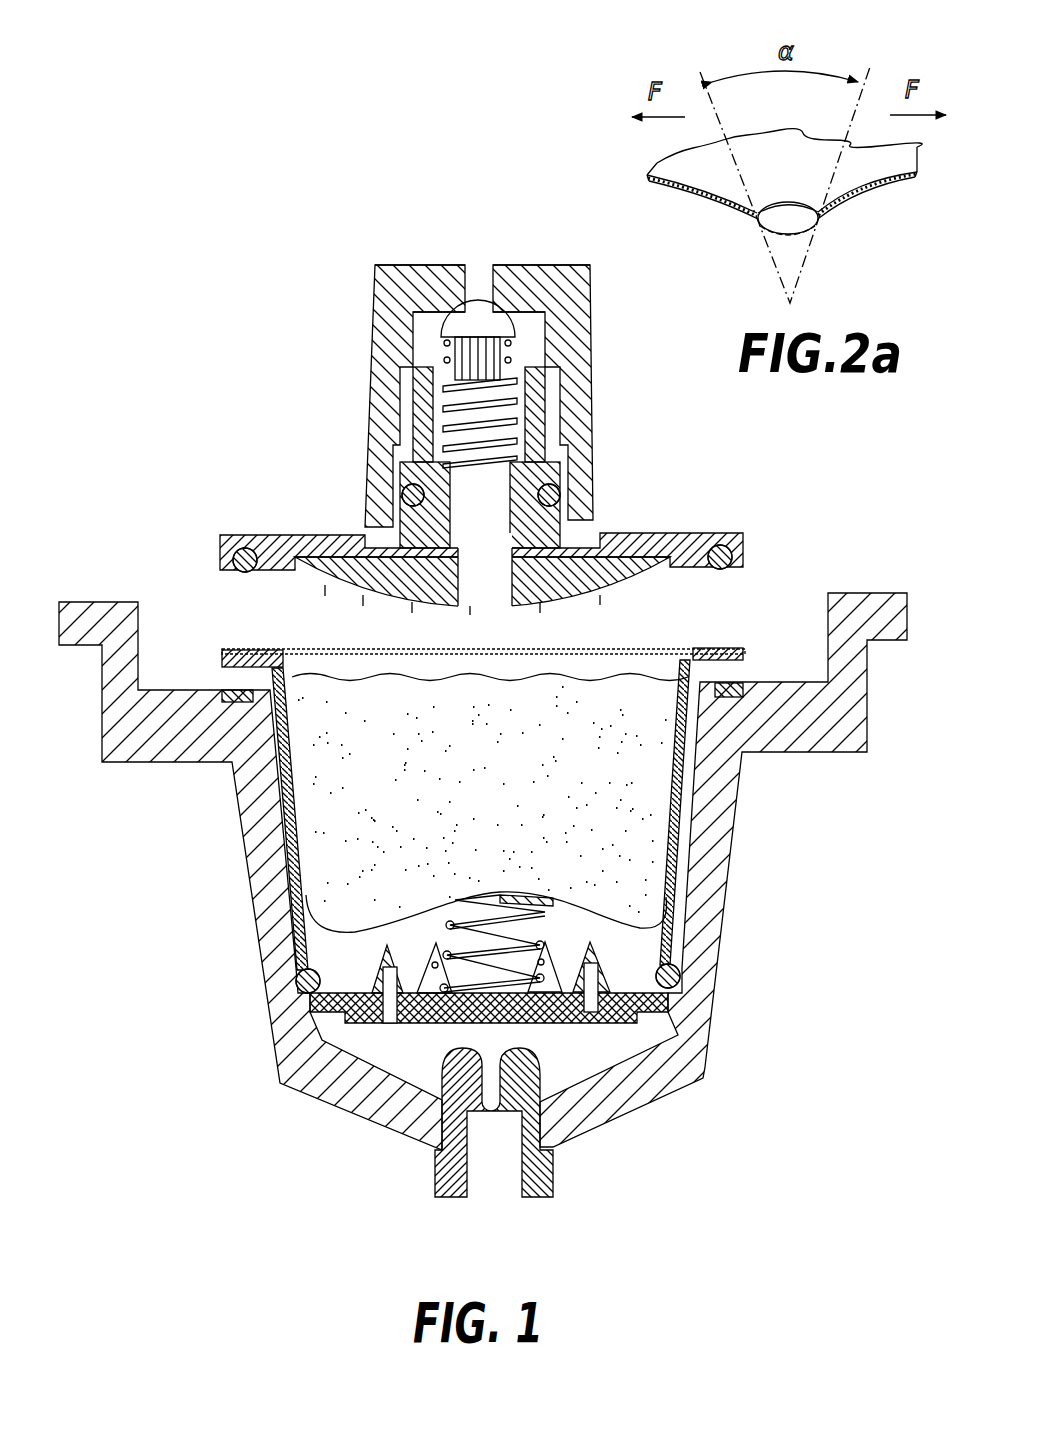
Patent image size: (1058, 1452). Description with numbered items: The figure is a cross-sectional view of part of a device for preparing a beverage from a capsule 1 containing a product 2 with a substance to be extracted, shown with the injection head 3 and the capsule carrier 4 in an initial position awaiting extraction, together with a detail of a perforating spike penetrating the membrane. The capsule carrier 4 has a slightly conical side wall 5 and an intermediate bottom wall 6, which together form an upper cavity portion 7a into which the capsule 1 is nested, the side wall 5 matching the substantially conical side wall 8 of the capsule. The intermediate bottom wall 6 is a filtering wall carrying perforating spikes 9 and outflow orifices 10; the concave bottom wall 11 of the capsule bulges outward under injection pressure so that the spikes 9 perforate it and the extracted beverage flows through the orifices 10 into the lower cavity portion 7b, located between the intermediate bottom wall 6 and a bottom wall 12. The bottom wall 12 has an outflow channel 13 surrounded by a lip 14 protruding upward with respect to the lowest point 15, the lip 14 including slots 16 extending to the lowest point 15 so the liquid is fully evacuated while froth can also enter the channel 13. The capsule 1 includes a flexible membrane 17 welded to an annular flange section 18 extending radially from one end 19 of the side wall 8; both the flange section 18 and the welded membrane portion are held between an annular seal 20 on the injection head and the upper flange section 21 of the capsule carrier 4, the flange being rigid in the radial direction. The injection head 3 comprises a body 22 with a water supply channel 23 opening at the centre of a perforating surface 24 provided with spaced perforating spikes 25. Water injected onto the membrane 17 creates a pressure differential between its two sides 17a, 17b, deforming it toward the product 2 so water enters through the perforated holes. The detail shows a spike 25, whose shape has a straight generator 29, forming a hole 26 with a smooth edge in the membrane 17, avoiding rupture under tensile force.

In FIG. 1, the capsule 1 is at (686, 821).
In FIG. 1, the product 2 is at (355, 846).
In FIG. 1, the injection head 3 is at (697, 453).
In FIG. 1, the capsule carrier 4 is at (736, 933).
In FIG. 1, the side wall 5 is at (705, 916).
In FIG. 1, the intermediate bottom wall 6 is at (656, 992).
In FIG. 1, the upper cavity portion 7a is at (633, 953).
In FIG. 1, the lower cavity portion 7b is at (356, 1048).
In FIG. 1, the side wall 8 is at (293, 787).
In FIG. 1, the perforating spikes 9 is at (378, 975).
In FIG. 1, the outflow orifices 10 is at (593, 1018).
In FIG. 1, the bottom wall 11 is at (556, 897).
In FIG. 1, the bottom wall 12 is at (333, 1088).
In FIG. 1, the outflow channel 13 is at (487, 1183).
In FIG. 1, the lip 14 is at (522, 1062).
In FIG. 1, the lowest point 15 is at (395, 1072).
In FIG. 1, the slots 16 is at (437, 1135).
In FIG. 1, the flexible membrane 17 is at (662, 643).
In FIG. 2a, the flexible membrane 17 is at (718, 190).
In FIG. 1, the side of the flexible membrane 17a is at (500, 652).
In FIG. 1, the side of the flexible membrane 17b is at (470, 662).
In FIG. 1, the annular flange section 18 is at (746, 655).
In FIG. 1, the end of the side wall 19 is at (702, 645).
In FIG. 1, the annular seal 20 is at (236, 565).
In FIG. 1, the upper flange section 21 is at (735, 697).
In FIG. 1, the body 22 is at (575, 461).
In FIG. 1, the water supply channel 23 is at (493, 547).
In FIG. 1, the perforating surface 24 is at (632, 590).
In FIG. 1, the perforating spikes 25 is at (413, 609).
In FIG. 2a, the hole 26 is at (797, 237).
In FIG. 2a, the generator 29 is at (845, 160).